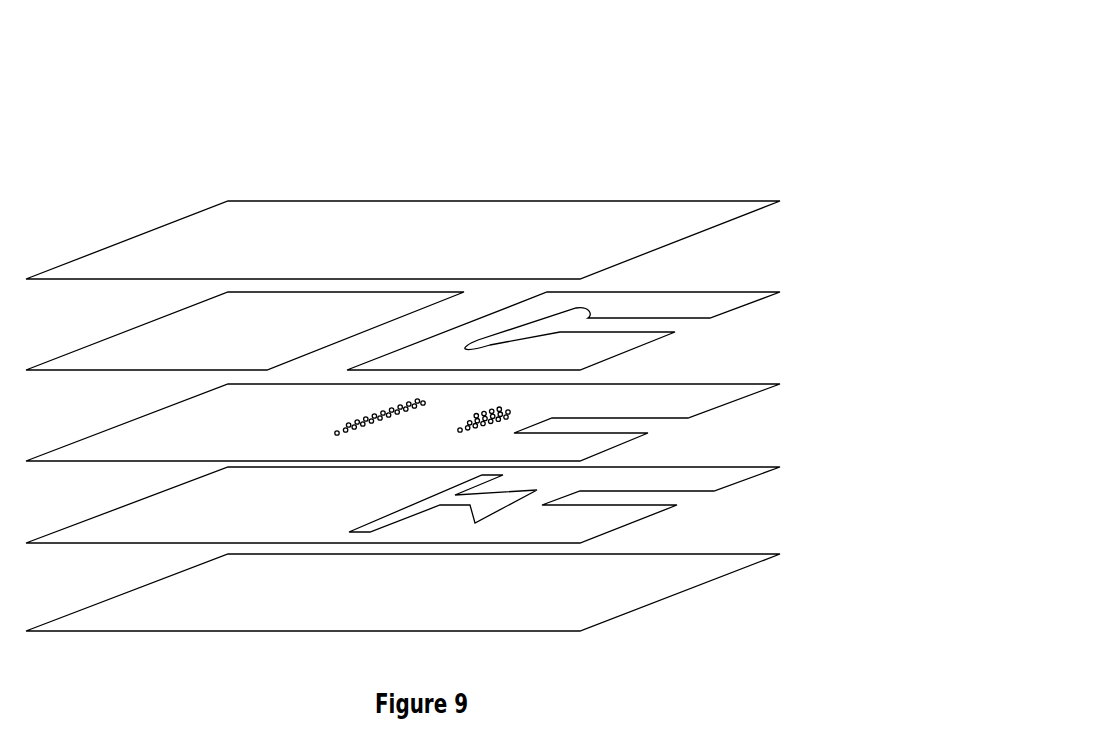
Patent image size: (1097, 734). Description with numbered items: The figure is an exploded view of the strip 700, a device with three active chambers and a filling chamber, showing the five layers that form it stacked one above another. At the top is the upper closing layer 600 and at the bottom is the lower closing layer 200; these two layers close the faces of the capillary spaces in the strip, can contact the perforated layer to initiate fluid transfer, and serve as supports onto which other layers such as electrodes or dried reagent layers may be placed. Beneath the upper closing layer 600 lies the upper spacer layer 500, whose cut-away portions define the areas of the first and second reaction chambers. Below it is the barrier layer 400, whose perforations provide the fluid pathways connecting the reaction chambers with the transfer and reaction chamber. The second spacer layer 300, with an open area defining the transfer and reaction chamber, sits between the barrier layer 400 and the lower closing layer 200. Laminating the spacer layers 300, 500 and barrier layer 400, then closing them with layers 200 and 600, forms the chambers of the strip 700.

The strip 700 is at (719, 127).
The upper closing layer 600 is at (767, 216).
The upper spacer layer 500 is at (774, 308).
The barrier layer 400 is at (774, 395).
The second spacer layer 300 is at (767, 486).
The lower closing layer 200 is at (758, 573).